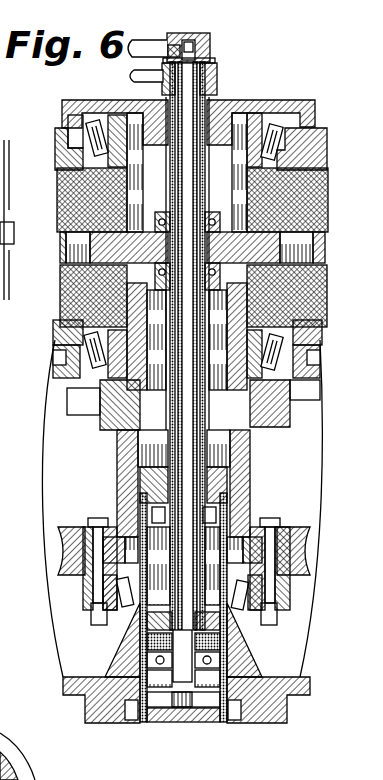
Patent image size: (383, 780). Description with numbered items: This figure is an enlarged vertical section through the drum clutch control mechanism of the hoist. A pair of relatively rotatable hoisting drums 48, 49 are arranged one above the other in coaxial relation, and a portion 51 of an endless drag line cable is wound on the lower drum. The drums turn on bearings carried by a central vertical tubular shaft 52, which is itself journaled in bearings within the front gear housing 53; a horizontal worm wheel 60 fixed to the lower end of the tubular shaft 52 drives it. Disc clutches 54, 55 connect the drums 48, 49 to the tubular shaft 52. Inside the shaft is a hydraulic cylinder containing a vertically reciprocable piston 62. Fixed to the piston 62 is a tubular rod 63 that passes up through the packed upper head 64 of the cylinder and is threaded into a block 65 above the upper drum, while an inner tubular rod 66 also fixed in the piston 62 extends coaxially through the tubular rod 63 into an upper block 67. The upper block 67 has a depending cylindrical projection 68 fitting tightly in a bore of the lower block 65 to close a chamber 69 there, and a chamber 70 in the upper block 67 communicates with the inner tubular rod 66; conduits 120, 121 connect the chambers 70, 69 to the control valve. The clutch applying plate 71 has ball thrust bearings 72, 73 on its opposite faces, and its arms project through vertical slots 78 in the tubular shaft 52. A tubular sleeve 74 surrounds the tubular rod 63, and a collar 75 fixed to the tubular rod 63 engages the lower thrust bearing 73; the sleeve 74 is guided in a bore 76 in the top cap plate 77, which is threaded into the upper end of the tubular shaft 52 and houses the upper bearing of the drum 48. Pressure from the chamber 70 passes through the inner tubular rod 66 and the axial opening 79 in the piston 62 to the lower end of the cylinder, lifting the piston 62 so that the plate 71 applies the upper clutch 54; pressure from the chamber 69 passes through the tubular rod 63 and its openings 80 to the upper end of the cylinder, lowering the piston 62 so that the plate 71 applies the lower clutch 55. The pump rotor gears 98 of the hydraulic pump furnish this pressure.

The conduit 120 is at (143, 40).
The chamber 70 is at (196, 29).
The upper block 67 is at (196, 41).
The depending cylindrical projection 68 is at (213, 60).
The chamber 69 is at (217, 75).
The block 65 is at (162, 85).
The conduit 121 is at (128, 76).
The top cap plate 77 is at (90, 100).
The bore 76 is at (226, 120).
The tubular sleeve 74 is at (237, 165).
The slots 78 is at (92, 158).
The hoisting drum 48 is at (310, 157).
The ball thrust bearing 72 is at (98, 197).
The pump rotor gears 98 is at (8, 218).
The disc clutch 54 is at (56, 230).
The clutch applying plate 71 is at (103, 248).
The disc clutch 55 is at (55, 318).
The ball thrust bearing 73 is at (53, 377).
The hoisting drum 49 is at (100, 370).
The collar 75 is at (151, 370).
The tubular shaft 52 is at (117, 455).
The tubular rod 63 is at (200, 452).
The upper head 64 is at (157, 487).
The tubular rod 66 is at (187, 495).
The worm wheel 60 is at (63, 537).
The openings 80 is at (135, 608).
The cable portion 51 is at (83, 580).
The piston 62 is at (140, 648).
The axial opening 79 is at (220, 642).
The front gear housing 53 is at (97, 695).